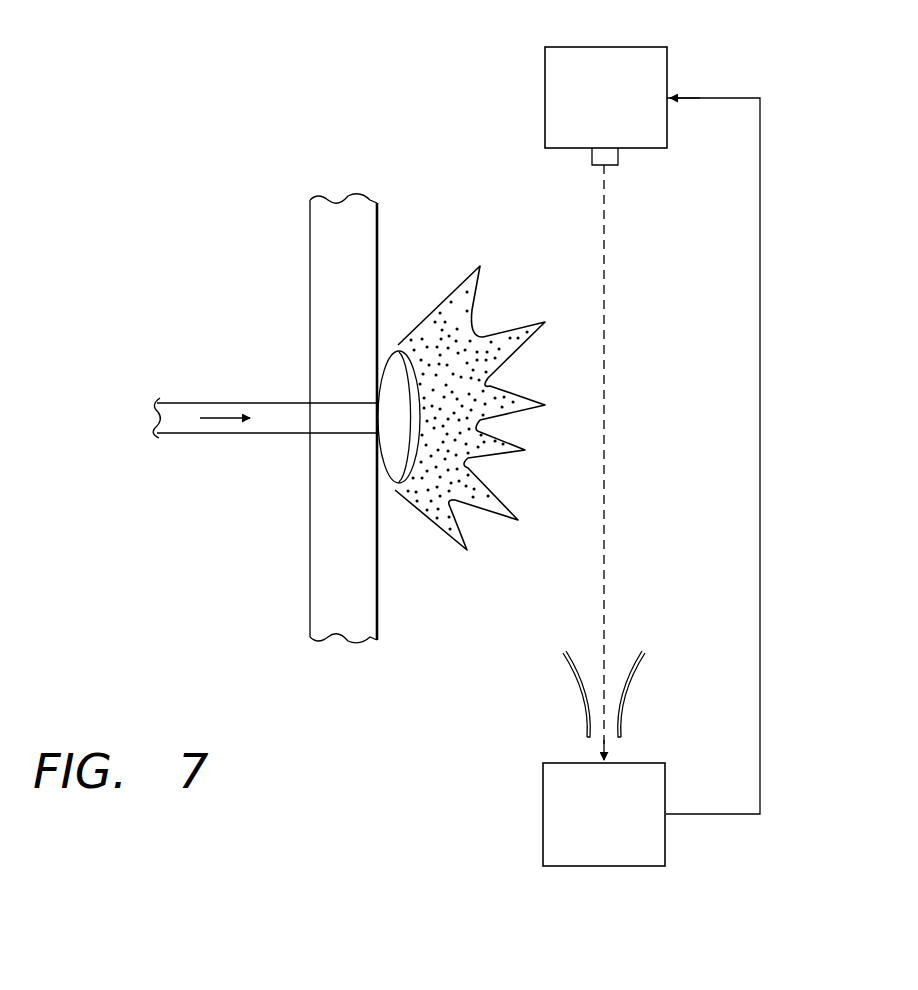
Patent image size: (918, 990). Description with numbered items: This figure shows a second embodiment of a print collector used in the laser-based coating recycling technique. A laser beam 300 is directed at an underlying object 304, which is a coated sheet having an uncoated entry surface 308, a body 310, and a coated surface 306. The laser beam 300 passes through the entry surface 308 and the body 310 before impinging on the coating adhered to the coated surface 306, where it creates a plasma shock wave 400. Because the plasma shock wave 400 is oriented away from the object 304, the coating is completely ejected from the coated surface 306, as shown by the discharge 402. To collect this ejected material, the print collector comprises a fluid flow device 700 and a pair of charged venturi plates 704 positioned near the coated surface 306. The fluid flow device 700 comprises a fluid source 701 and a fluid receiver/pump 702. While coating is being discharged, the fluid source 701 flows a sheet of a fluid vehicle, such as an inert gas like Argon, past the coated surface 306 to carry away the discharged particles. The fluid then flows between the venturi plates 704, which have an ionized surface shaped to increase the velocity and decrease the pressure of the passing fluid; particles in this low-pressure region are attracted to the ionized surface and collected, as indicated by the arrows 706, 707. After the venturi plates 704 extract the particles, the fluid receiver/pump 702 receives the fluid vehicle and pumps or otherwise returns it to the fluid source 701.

The laser beam 300 is at (219, 403).
The underlying object 304 is at (378, 232).
The coated surface 306 is at (378, 605).
The entry surface 308 is at (310, 603).
The body 310 is at (330, 237).
The plasma shock wave 400 is at (393, 365).
The discharge 402 is at (515, 327).
The fluid flow device 700 is at (702, 52).
The fluid source 701 is at (545, 96).
The fluid receiver/pump 702 is at (543, 816).
The charged venturi plates 704 is at (560, 703).
The arrow 706 is at (622, 650).
The arrow 707 is at (586, 650).